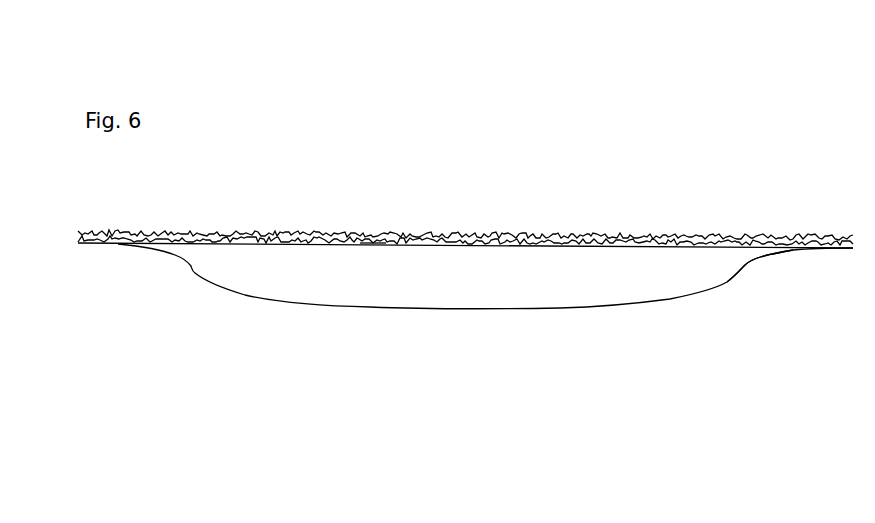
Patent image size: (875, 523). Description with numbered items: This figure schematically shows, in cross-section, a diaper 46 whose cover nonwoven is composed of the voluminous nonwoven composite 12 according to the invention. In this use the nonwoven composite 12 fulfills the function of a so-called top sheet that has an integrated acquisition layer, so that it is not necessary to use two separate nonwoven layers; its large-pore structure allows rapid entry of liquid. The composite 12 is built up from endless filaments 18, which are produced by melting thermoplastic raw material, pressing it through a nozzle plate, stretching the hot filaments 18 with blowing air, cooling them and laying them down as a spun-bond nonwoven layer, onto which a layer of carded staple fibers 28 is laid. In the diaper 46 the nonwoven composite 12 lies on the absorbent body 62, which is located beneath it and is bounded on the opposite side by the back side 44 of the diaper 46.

The diaper 46 is at (778, 132).
The carded staple fibers 28 is at (235, 231).
The voluminous nonwoven composite 12 is at (379, 229).
The filaments 18 is at (707, 247).
The back side 44 is at (372, 308).
The absorbent body 62 is at (588, 283).